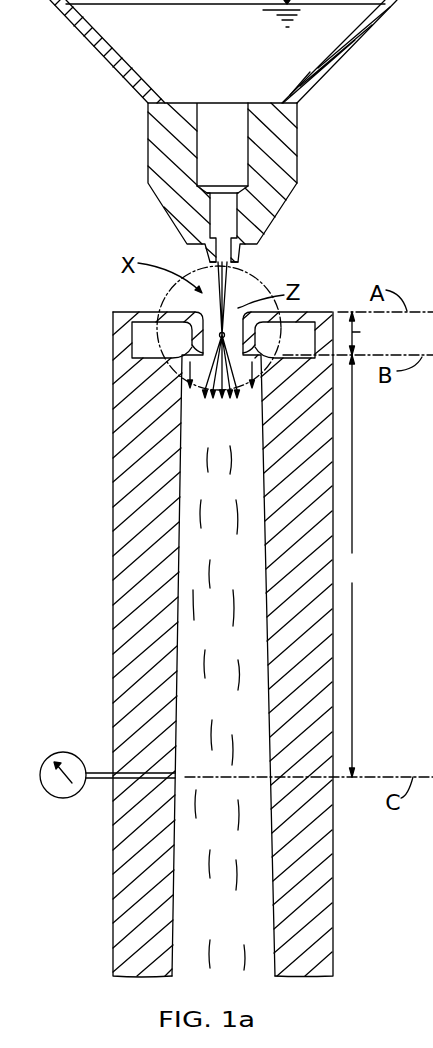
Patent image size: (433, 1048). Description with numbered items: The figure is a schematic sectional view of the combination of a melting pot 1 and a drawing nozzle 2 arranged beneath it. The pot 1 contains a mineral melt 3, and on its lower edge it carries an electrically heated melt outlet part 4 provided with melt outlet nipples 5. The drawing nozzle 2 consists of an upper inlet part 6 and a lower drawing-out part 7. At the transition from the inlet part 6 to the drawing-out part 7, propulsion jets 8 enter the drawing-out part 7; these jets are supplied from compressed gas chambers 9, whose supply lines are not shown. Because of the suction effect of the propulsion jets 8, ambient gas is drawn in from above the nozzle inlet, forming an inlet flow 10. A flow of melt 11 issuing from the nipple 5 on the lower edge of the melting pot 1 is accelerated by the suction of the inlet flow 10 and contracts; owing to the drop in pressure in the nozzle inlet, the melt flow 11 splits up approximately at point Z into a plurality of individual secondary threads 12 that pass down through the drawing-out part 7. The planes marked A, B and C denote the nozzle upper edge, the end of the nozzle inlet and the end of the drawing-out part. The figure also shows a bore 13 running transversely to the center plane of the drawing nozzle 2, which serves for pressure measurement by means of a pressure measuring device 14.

The melting pot 1 is at (96, 62).
The drawing nozzle 2 is at (110, 668).
The mineral melt 3 is at (322, 47).
The melt outlet part 4 is at (178, 222).
The melt outlet nipple 5 is at (212, 263).
The inlet part 6 is at (358, 333).
The drawing-out part 7 is at (309, 566).
The propulsion jets 8 is at (193, 365).
The compressed gas chambers 9 is at (137, 333).
The inlet flow 10 is at (245, 291).
The melt flow 11 is at (214, 295).
The secondary threads 12 is at (208, 402).
The bore 13 is at (113, 790).
The pressure measuring device 14 is at (62, 798).